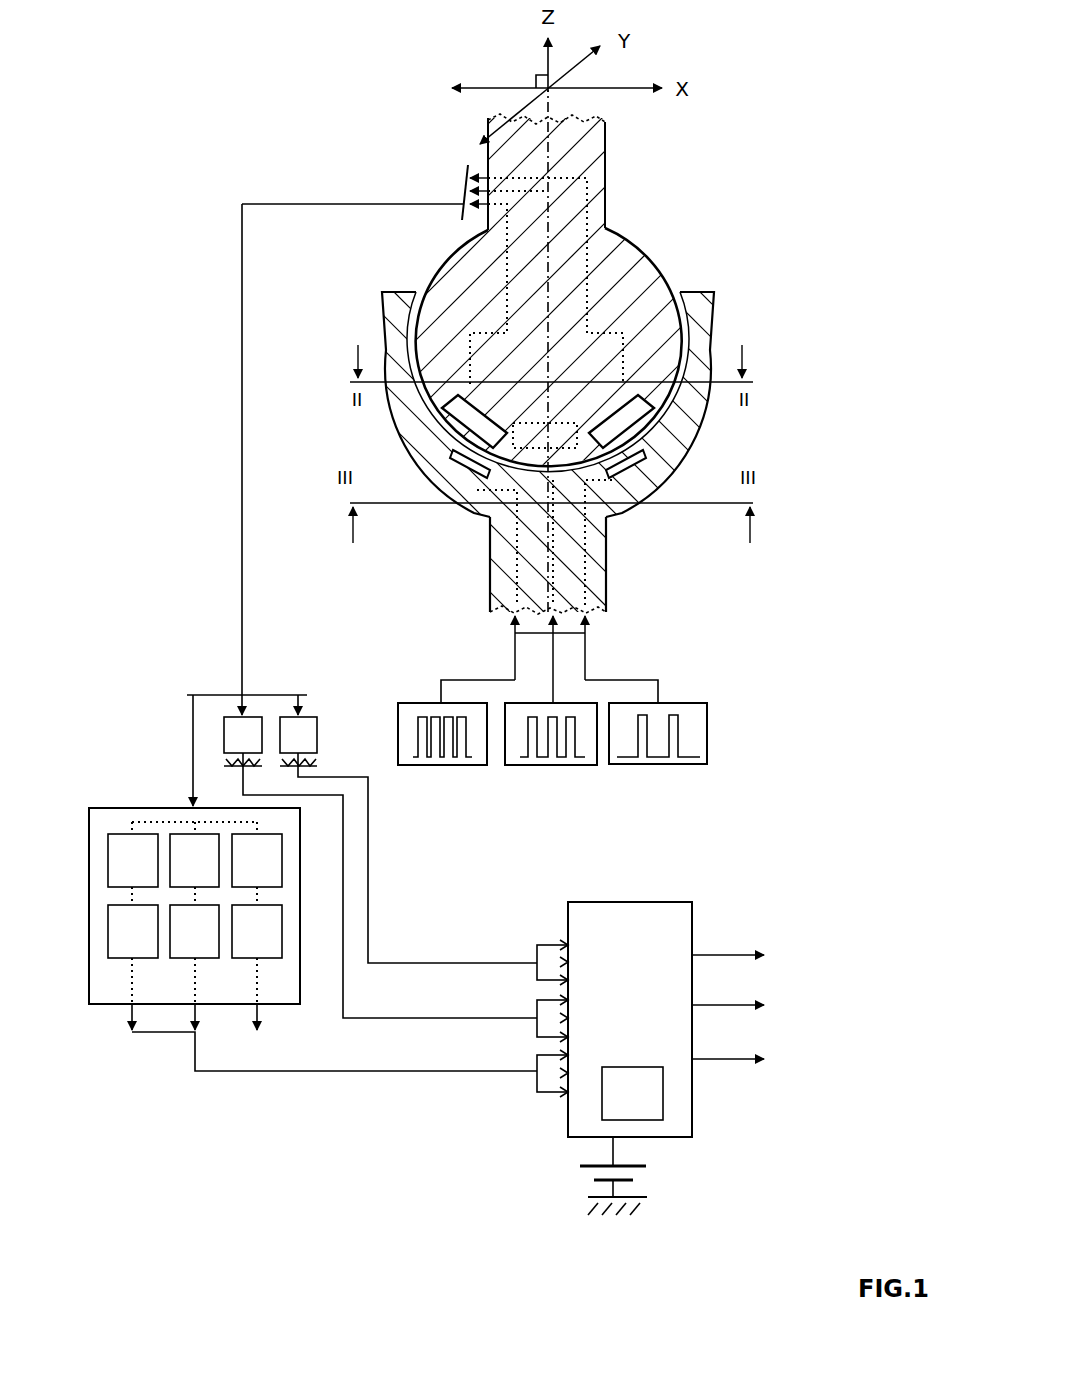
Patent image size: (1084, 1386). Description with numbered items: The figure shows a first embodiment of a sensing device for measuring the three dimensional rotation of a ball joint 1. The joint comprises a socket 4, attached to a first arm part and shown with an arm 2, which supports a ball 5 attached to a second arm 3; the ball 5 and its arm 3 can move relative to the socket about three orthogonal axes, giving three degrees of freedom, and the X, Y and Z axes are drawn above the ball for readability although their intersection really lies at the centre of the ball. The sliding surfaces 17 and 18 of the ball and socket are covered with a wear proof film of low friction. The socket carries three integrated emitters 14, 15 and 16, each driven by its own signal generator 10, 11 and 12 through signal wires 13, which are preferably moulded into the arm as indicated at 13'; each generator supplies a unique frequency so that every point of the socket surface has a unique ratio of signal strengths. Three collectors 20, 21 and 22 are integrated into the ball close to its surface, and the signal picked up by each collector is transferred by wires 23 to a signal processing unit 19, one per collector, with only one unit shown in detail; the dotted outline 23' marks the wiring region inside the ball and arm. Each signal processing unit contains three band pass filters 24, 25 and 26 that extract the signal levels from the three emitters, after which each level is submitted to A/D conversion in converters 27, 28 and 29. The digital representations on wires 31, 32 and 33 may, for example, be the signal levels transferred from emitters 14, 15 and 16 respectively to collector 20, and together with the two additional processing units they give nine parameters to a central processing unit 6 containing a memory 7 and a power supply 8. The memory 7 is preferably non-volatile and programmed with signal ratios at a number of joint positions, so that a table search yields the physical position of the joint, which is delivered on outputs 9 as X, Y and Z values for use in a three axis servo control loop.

The ball joint 1 is at (742, 236).
The arm 2 is at (553, 560).
The second arm 3 is at (601, 164).
The socket 4 is at (708, 326).
The ball 5 is at (630, 271).
The central processing unit 6 is at (648, 924).
The memory 7 is at (640, 1090).
The power supply 8 is at (592, 1168).
The outputs 9 is at (722, 1059).
The signal generator 10 is at (466, 760).
The signal generator 11 is at (586, 757).
The signal generator 12 is at (698, 745).
The signal wires 13 is at (579, 659).
The moulded signal wires 13' is at (589, 588).
The emitter 14 is at (468, 467).
The emitter 15 is at (541, 492).
The emitter 16 is at (632, 469).
The sliding surface 17 is at (389, 331).
The sliding surface 18 is at (679, 302).
The signal processing unit 19 is at (243, 736).
The collector 20 is at (470, 421).
The collector 21 is at (533, 440).
The collector 22 is at (620, 433).
The wires 23 is at (415, 192).
The core outline 23' is at (573, 391).
The band pass filter 24 is at (119, 843).
The band pass filter 25 is at (179, 843).
The band pass filter 26 is at (276, 846).
The A/D converter 27 is at (127, 948).
The A/D converter 28 is at (182, 948).
The A/D converter 29 is at (246, 948).
The wire 31 is at (128, 1025).
The wire 32 is at (190, 1021).
The wire 33 is at (258, 1019).